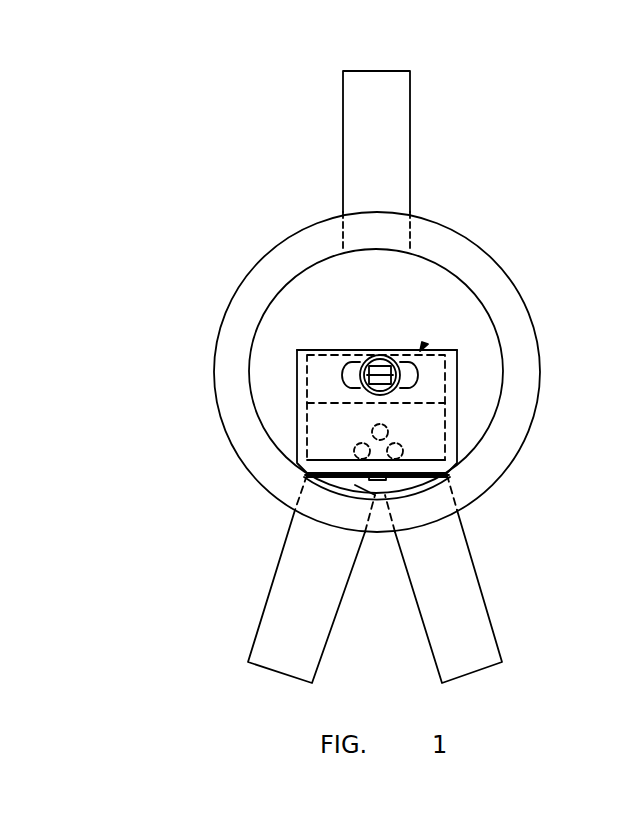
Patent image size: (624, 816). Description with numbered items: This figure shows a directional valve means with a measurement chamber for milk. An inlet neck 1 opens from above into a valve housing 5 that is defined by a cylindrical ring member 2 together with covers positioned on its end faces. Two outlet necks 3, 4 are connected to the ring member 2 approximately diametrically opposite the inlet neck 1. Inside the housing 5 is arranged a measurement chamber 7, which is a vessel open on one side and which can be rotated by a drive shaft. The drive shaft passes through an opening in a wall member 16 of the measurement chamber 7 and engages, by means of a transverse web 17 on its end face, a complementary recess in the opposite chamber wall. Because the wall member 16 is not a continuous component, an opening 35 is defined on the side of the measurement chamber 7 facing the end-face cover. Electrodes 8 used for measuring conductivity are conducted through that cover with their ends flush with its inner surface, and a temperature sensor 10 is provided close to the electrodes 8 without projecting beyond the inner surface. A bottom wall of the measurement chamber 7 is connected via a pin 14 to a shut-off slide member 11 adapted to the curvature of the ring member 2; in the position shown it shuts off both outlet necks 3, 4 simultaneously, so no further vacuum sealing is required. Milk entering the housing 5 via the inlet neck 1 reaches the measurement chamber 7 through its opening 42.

The inlet neck 1 is at (402, 140).
The cylindrical ring member 2 is at (507, 298).
The outlet neck 3 is at (473, 642).
The outlet neck 4 is at (293, 628).
The valve housing 5 is at (483, 337).
The measurement chamber 7 is at (297, 428).
The electrodes 8 is at (360, 451).
The temperature sensor 10 is at (370, 432).
The shut-off slide member 11 is at (375, 493).
The pin 14 is at (343, 480).
The wall member 16 is at (325, 380).
The transverse web 17 is at (371, 354).
The opening 35 is at (427, 427).
The opening of the measurement chamber 42 is at (423, 349).